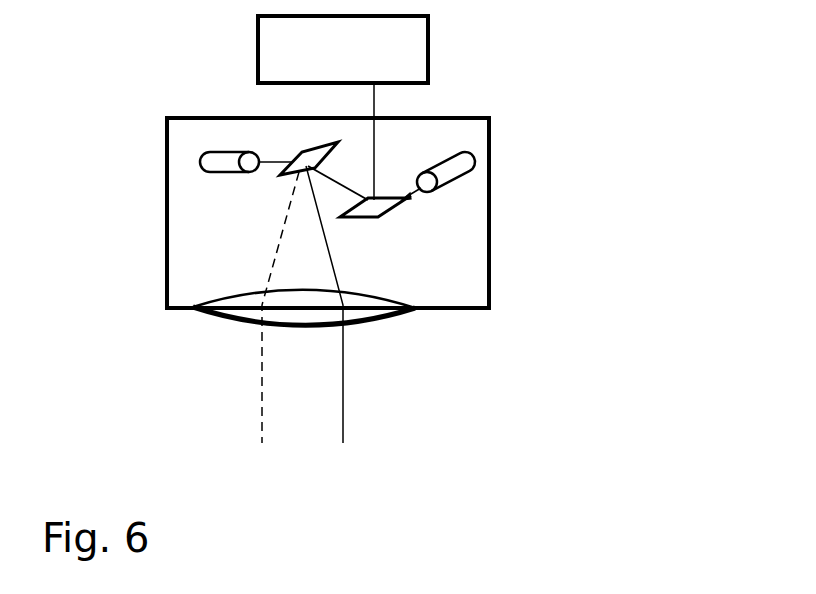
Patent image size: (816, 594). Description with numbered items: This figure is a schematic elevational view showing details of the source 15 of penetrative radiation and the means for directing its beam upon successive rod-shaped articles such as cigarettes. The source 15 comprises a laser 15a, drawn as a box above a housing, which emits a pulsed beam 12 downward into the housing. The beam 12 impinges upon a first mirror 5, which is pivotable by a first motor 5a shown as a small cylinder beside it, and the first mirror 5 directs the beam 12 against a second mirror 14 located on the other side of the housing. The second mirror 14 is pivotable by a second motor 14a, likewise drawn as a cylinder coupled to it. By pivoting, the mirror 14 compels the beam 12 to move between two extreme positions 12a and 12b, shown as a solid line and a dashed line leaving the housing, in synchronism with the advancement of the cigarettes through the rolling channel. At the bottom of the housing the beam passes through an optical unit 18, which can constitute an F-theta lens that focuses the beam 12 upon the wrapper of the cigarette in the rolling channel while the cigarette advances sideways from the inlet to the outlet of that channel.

The source 15 is at (167, 43).
The laser 15a is at (428, 48).
The pulsed beam 12 is at (376, 102).
The second motor 14a is at (201, 162).
The second mirror 14 is at (280, 176).
The first motor 5a is at (466, 168).
The first mirror 5 is at (403, 207).
The optical unit 18 is at (243, 313).
The extreme position of the beam 12a is at (345, 383).
The extreme position of the beam 12b is at (259, 383).